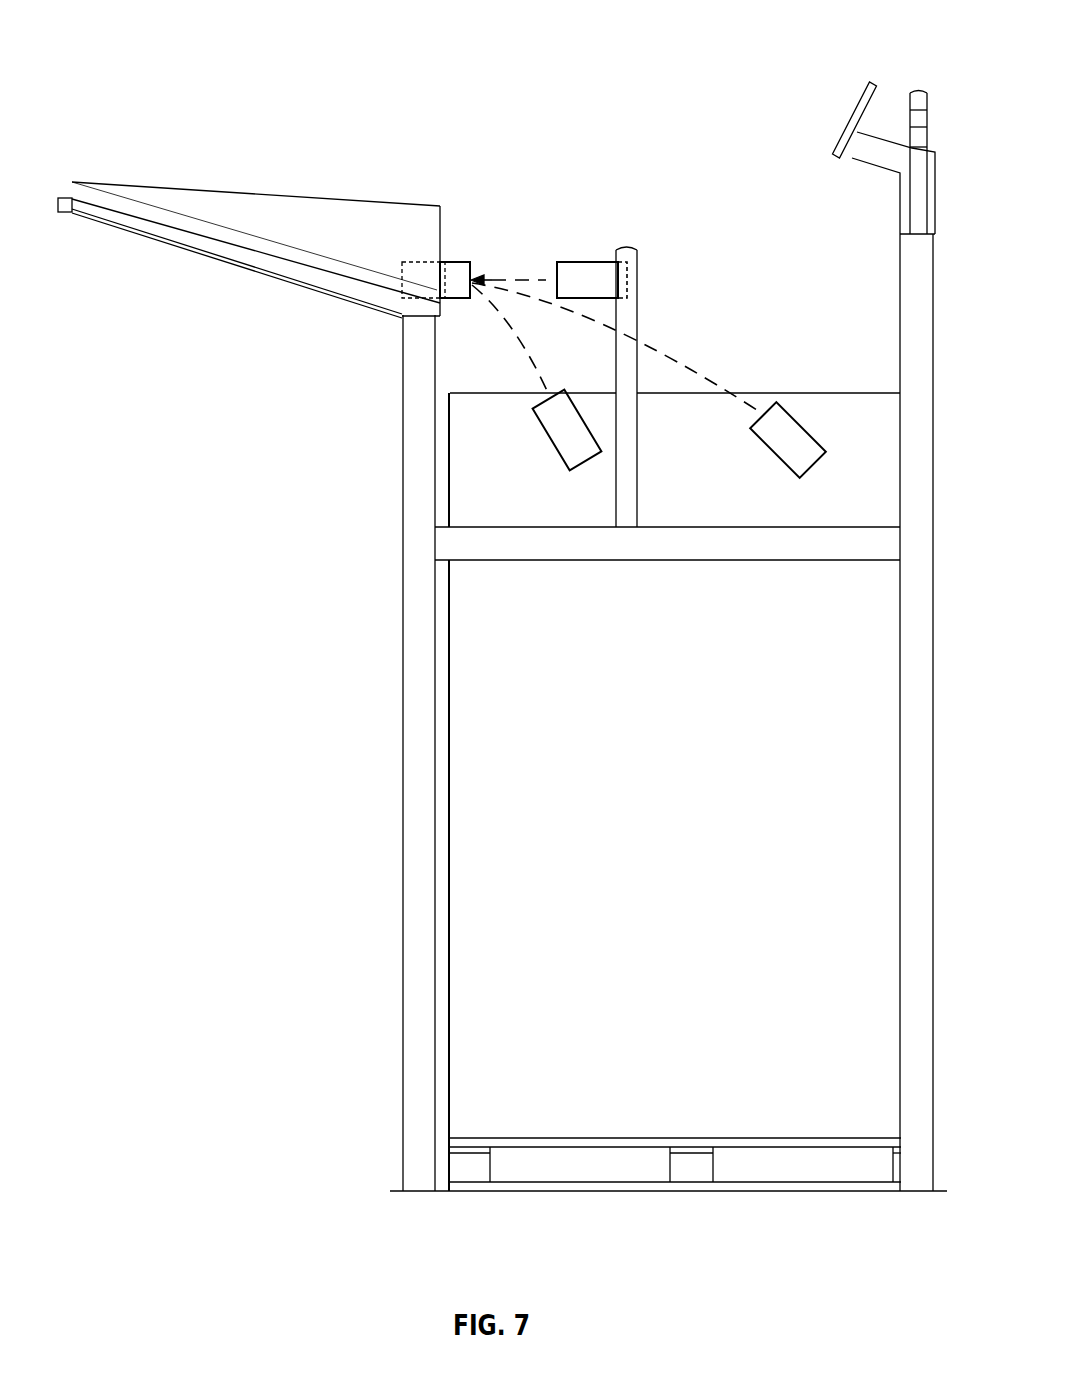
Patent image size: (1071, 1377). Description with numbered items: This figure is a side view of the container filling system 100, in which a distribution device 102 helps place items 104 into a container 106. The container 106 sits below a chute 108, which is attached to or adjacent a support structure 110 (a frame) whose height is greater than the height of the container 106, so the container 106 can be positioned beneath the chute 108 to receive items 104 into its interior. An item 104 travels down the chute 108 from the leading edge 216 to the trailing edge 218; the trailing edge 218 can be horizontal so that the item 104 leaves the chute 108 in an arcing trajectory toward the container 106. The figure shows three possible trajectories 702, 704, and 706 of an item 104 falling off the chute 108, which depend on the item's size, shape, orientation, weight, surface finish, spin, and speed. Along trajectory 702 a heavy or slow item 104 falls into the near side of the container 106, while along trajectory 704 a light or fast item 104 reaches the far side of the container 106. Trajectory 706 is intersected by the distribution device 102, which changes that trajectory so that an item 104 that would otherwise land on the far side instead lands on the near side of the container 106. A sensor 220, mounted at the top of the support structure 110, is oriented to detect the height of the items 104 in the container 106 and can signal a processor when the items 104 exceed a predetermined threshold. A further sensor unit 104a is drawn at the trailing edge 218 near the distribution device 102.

The container filling system 100 is at (128, 42).
The distribution device 102 is at (637, 307).
The item 104 is at (590, 262).
The sensor 104a is at (453, 258).
The container 106 is at (450, 440).
The chute 108 is at (267, 193).
The support structure 110 is at (403, 737).
The leading edge 216 is at (70, 214).
The trailing edge 218 is at (426, 304).
The sensor 220 is at (846, 120).
The trajectory 702 is at (521, 328).
The trajectory 704 is at (690, 367).
The trajectory 706 is at (538, 278).